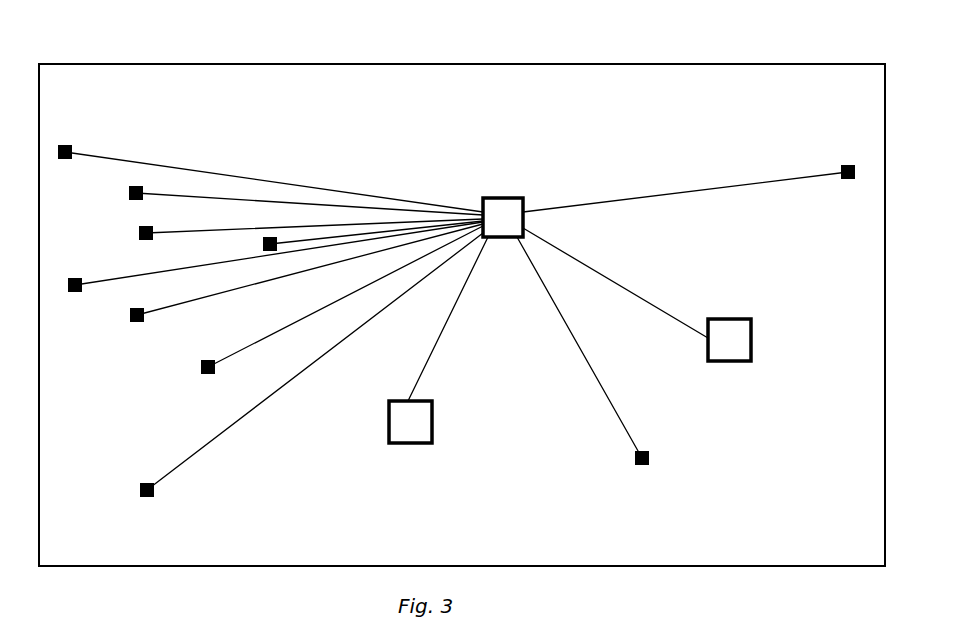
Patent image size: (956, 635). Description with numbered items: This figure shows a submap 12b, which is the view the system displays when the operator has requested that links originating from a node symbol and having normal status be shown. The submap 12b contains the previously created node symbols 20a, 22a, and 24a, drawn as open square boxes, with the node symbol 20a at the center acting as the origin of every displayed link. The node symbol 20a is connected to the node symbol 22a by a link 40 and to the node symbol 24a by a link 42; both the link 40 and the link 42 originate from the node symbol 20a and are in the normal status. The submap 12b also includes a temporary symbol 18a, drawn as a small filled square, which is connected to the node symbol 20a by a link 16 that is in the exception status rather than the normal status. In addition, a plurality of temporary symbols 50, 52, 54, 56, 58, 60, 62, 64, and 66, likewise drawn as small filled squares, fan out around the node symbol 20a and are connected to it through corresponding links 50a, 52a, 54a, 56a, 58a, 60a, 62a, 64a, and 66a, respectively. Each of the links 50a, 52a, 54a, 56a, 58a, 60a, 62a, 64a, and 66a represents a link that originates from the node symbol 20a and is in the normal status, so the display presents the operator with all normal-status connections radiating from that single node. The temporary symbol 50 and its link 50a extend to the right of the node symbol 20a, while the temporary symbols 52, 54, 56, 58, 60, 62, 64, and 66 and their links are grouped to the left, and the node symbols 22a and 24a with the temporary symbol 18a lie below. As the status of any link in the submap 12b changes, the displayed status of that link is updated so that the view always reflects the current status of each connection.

The submap 12b is at (764, 47).
The node symbol 20a is at (501, 197).
The node symbol 22a is at (388, 421).
The node symbol 24a is at (751, 338).
The temporary symbol 18a is at (649, 458).
The link 16 is at (576, 338).
The link 40 is at (452, 312).
The link 42 is at (628, 290).
The temporary symbol 50 is at (849, 165).
The link 50a is at (707, 190).
The temporary symbol 52 is at (140, 490).
The link 52a is at (203, 448).
The temporary symbol 54 is at (201, 367).
The link 54a is at (240, 352).
The temporary symbol 56 is at (133, 322).
The link 56a is at (235, 292).
The temporary symbol 58 is at (78, 292).
The link 58a is at (162, 270).
The temporary symbol 60 is at (263, 244).
The link 60a is at (300, 240).
The temporary symbol 62 is at (139, 233).
The link 62a is at (342, 225).
The temporary symbol 64 is at (129, 193).
The link 64a is at (383, 208).
The temporary symbol 66 is at (68, 145).
The link 66a is at (445, 207).